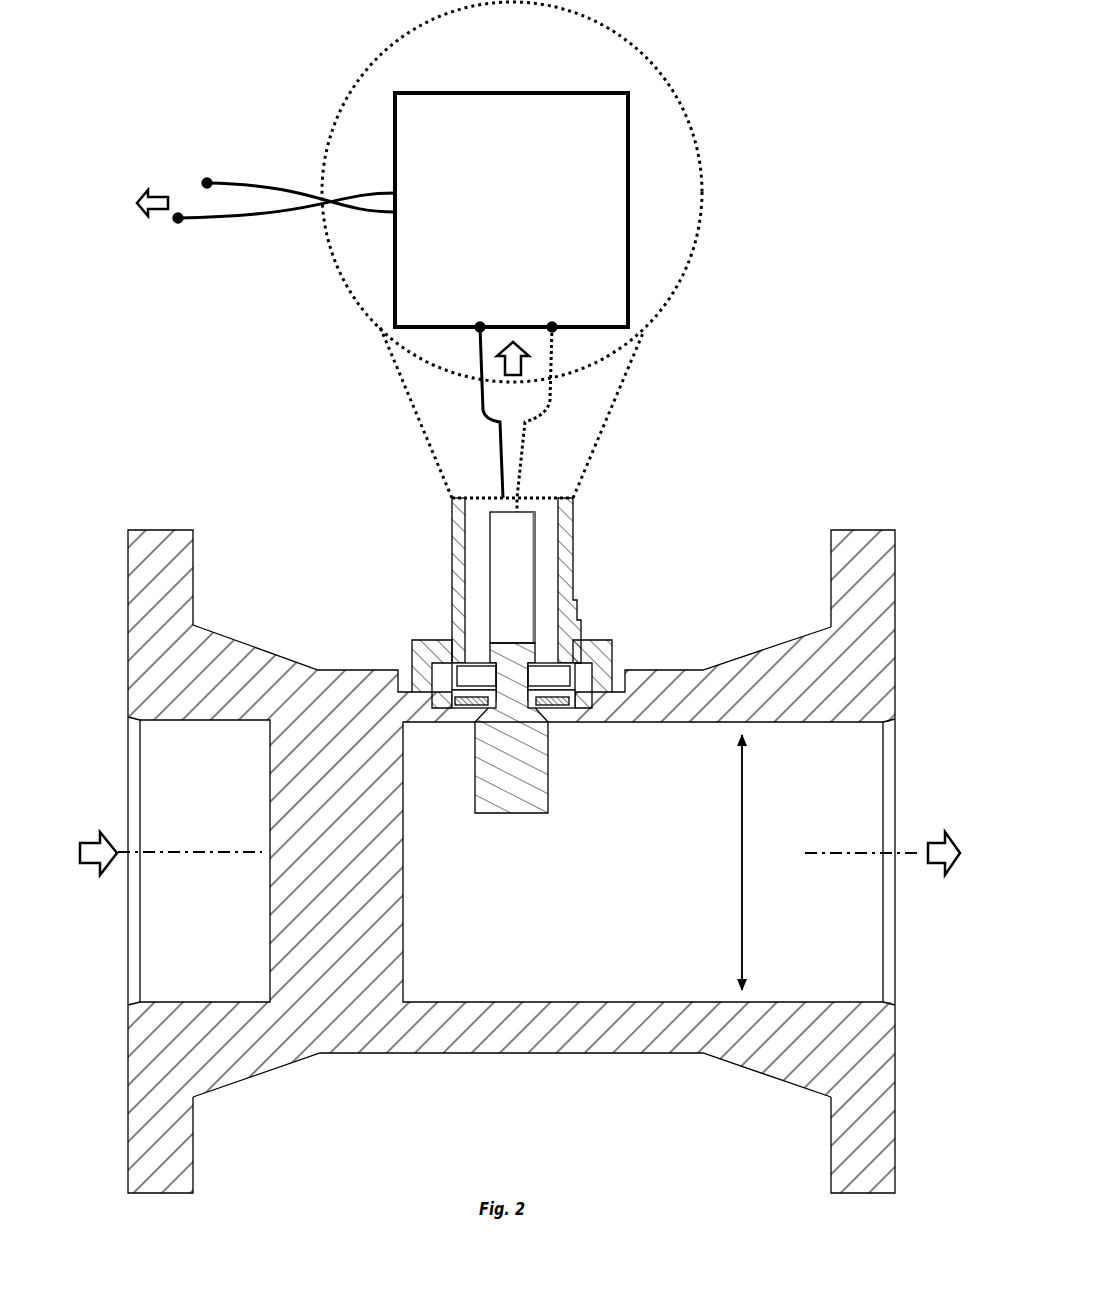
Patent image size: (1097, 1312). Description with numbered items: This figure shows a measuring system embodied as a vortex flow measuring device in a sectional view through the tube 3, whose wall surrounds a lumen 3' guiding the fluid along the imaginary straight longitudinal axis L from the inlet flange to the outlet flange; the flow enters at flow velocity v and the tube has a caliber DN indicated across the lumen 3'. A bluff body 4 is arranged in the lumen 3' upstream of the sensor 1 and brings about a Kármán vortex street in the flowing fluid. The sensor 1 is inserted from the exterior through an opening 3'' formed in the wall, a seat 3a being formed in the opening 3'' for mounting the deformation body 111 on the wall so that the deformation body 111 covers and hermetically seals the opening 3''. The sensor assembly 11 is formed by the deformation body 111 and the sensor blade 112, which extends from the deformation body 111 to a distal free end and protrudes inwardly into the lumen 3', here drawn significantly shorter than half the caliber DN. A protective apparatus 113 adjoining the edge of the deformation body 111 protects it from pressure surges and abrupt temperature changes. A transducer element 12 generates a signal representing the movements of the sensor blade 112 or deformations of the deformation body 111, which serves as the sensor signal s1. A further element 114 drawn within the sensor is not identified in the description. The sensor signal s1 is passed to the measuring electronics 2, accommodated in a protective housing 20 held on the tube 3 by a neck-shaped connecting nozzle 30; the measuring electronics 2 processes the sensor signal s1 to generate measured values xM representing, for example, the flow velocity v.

The sensor 1 is at (388, 521).
The measuring electronics 2 is at (511, 210).
The tube 3 is at (511, 830).
The lumen 3' is at (643, 862).
The opening 3'' is at (467, 735).
The seat 3a is at (402, 660).
The bluff body 4 is at (244, 861).
The sensor assembly 11 is at (552, 704).
The transducer element 12 is at (522, 505).
The protective housing 20 is at (700, 216).
The connecting nozzle 30 is at (585, 510).
The deformation body 111 is at (482, 690).
The sensor blade 112 is at (512, 797).
The protective apparatus 113 is at (558, 712).
The sensing element 114 is at (512, 560).
The measured values xM is at (266, 196).
The sensor signal s1 is at (513, 376).
The caliber DN is at (756, 862).
The longitudinal axis L is at (127, 856).
The flow velocity v is at (500, 865).